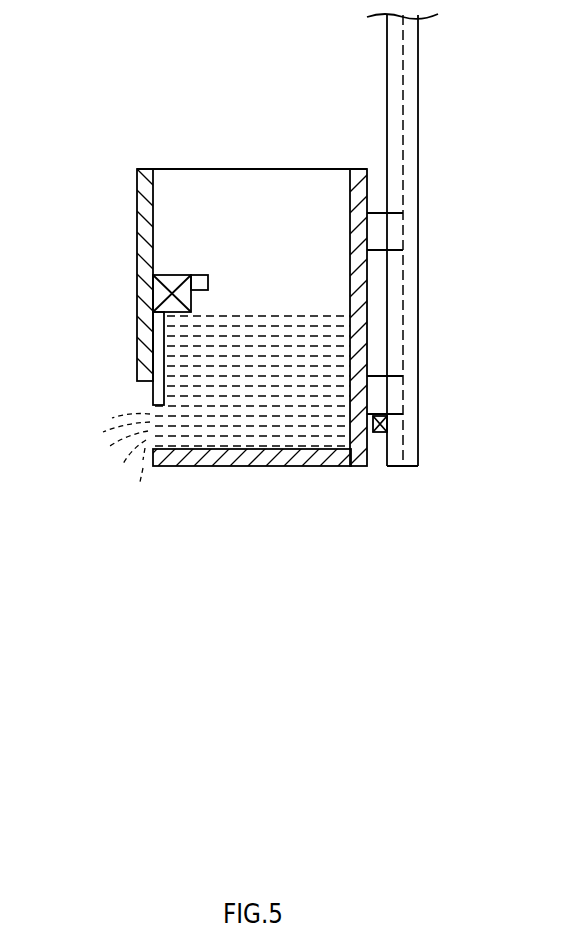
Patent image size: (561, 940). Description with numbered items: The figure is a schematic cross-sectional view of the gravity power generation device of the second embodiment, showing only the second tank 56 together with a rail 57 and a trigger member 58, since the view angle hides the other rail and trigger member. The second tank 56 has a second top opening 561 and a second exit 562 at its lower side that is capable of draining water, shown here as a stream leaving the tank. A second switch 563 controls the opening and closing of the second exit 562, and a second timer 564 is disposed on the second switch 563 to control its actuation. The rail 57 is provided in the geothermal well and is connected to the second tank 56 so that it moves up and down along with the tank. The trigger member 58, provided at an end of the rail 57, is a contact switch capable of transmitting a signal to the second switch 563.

The second tank 56 is at (127, 304).
The second top opening 561 is at (298, 168).
The second exit 562 is at (158, 393).
The second switch 563 is at (171, 277).
The second timer 564 is at (210, 275).
The rail 57 is at (430, 231).
The trigger member 58 is at (379, 433).